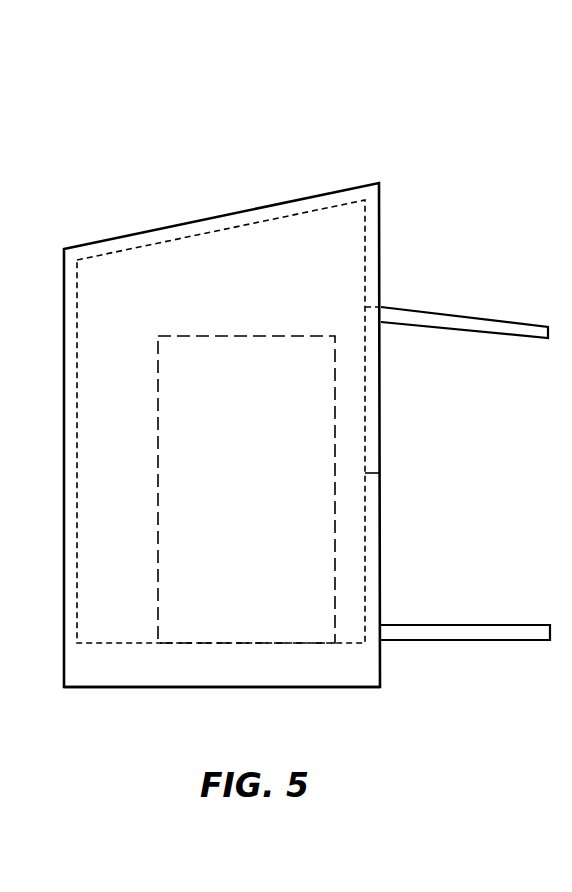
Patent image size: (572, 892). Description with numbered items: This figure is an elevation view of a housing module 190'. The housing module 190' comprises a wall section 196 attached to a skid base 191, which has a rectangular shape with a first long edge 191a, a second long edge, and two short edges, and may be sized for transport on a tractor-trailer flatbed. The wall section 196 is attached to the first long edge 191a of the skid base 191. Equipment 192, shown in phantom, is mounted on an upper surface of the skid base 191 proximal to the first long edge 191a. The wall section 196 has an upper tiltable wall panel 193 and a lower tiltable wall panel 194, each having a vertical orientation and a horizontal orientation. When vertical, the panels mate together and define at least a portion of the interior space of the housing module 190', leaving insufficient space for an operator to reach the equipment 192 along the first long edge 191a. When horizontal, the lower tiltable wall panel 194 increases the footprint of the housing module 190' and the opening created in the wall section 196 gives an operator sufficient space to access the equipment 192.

The housing module 190' is at (397, 106).
The skid base 191 is at (251, 679).
The first long edge 191a is at (382, 667).
The equipment 192 is at (271, 486).
The upper tiltable wall panel 193 is at (493, 321).
The lower tiltable wall panel 194 is at (488, 642).
The wall section 196 is at (380, 237).